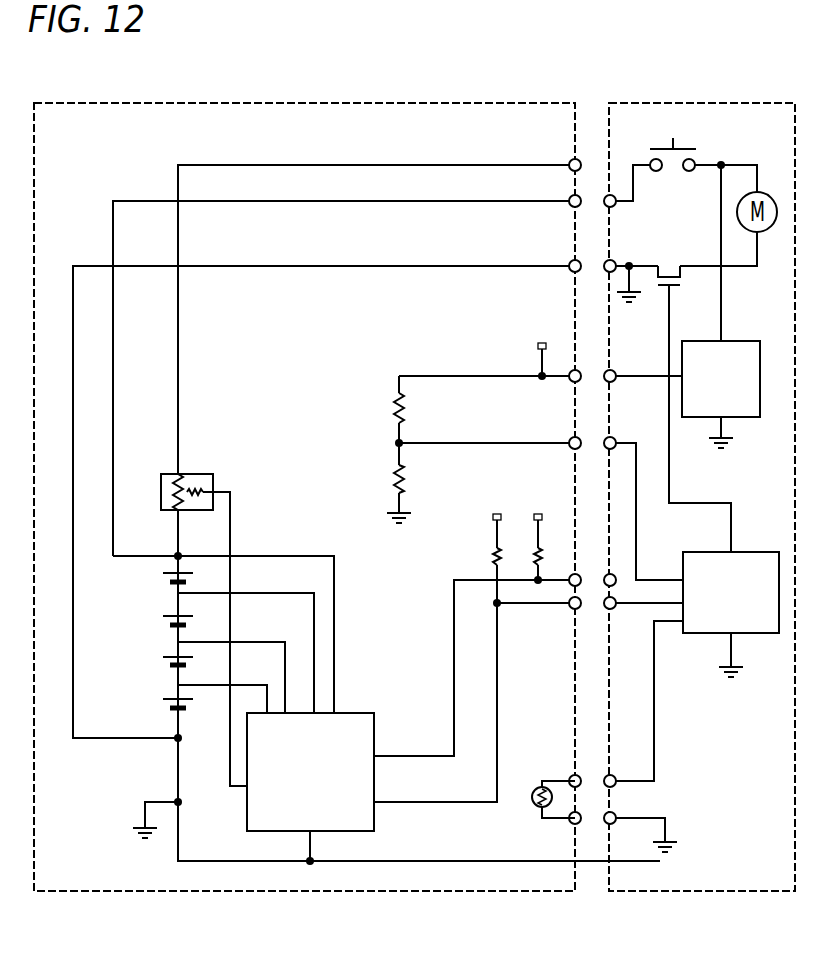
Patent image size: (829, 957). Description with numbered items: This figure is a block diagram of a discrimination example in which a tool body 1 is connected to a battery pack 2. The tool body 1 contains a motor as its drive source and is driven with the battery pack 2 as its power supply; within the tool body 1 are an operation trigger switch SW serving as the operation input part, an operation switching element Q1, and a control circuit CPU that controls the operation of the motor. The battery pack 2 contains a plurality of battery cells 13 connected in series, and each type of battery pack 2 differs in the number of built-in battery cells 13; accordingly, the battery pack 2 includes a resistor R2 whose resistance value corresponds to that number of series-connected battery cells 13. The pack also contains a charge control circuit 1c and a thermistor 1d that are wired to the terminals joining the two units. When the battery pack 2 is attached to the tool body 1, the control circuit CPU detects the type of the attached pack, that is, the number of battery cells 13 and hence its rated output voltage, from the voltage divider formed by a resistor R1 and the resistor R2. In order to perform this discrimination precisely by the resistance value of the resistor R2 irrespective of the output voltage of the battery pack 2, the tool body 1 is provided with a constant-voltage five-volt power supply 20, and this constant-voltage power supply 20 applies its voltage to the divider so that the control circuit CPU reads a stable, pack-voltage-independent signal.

The tool body 1 is at (755, 102).
The battery pack 2 is at (447, 103).
The battery cells 13 is at (145, 640).
The charge control circuit 1c is at (367, 712).
The thermistor 1d is at (532, 803).
The constant-voltage power supply 20 is at (737, 345).
The control circuit CPU is at (735, 551).
The operation trigger switch SW is at (672, 137).
The operation switching element Q1 is at (693, 387).
The resistor R1 is at (418, 409).
The resistor R2 is at (418, 470).